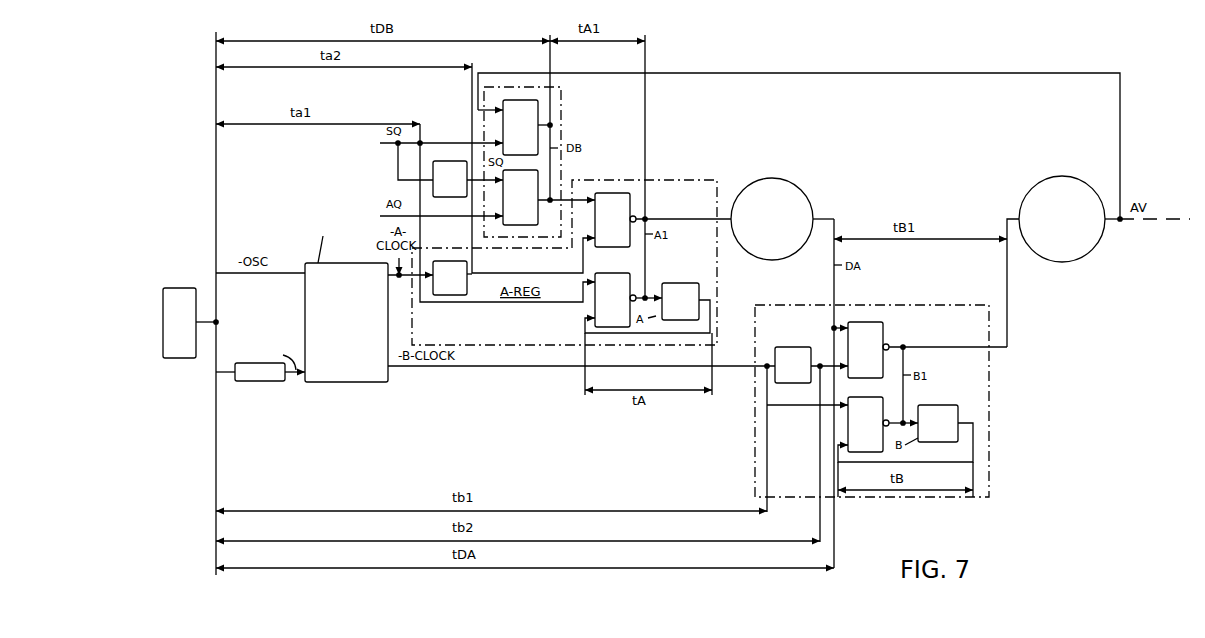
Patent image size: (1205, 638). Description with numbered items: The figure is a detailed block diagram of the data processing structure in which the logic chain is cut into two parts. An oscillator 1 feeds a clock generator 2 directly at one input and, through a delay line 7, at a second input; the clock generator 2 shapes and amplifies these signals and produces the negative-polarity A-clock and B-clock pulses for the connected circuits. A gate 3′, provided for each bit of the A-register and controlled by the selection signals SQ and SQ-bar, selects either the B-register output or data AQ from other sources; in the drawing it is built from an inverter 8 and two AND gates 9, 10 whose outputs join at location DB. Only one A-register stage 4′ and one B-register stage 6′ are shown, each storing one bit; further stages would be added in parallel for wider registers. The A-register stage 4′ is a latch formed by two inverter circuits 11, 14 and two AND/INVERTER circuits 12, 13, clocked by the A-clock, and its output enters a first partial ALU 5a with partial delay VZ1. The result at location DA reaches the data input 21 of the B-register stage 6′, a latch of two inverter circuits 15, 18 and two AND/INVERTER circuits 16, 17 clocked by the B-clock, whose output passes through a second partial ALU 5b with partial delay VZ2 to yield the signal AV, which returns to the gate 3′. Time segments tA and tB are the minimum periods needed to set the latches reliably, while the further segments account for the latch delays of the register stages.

The oscillator 1 is at (180, 288).
The clock generator 2 is at (343, 382).
The gate 3′ is at (561, 97).
The A-register stage 4′ is at (616, 180).
The partial ALU 5a is at (803, 185).
The partial ALU 5b is at (1040, 183).
The B-register stage 6′ is at (890, 305).
The delay line 7 is at (272, 382).
The inverter 8 is at (444, 166).
The AND gate 9 is at (528, 106).
The AND gate 10 is at (549, 197).
The inverter circuit 11 is at (467, 289).
The AND/INVERTER circuit 12 is at (610, 247).
The AND/INVERTER circuit 13 is at (620, 273).
The inverter circuit 14 is at (681, 283).
The inverter circuit 15 is at (792, 347).
The AND/INVERTER circuit 16 is at (889, 340).
The AND/INVERTER circuit 17 is at (855, 397).
The inverter circuit 18 is at (936, 405).
The data input 21 is at (833, 313).